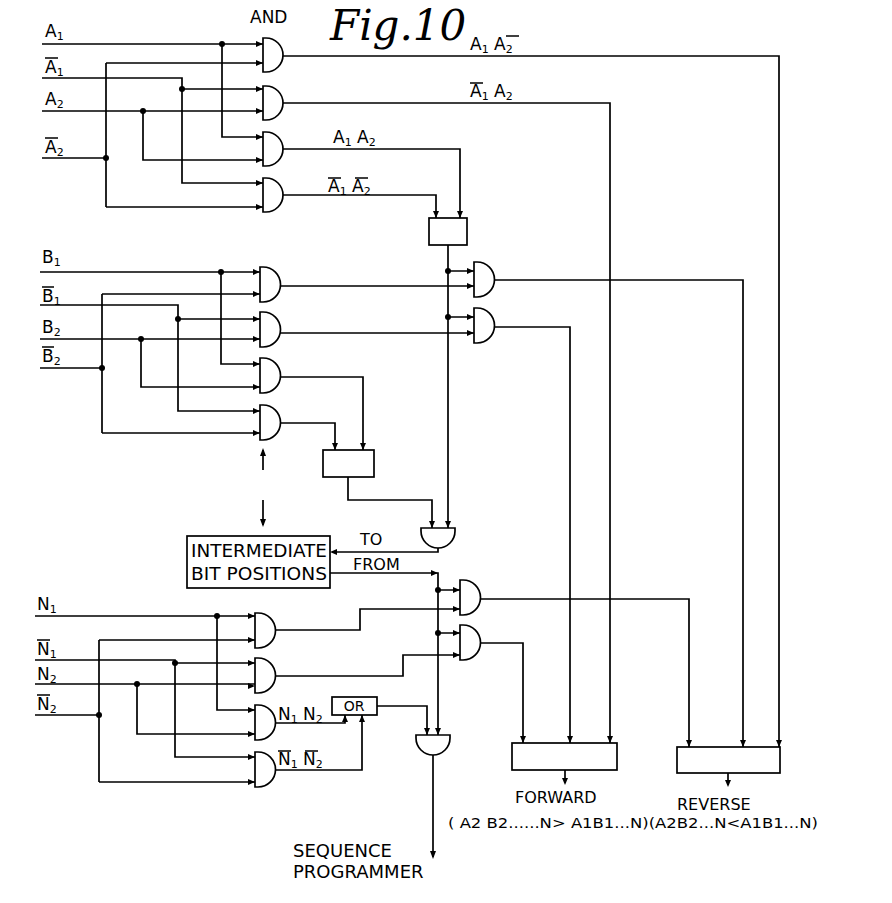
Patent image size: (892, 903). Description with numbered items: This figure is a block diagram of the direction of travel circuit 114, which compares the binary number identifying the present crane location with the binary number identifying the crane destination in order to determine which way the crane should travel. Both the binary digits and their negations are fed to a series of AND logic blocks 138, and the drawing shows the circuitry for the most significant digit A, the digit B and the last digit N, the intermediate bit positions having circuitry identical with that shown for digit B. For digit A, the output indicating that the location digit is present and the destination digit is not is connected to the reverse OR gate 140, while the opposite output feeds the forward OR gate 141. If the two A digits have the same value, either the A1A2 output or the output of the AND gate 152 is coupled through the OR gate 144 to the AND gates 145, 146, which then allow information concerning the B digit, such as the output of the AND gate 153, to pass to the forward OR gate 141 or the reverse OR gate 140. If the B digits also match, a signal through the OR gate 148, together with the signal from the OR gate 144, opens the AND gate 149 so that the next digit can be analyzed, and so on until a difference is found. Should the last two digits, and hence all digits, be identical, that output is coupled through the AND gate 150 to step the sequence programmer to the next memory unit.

The AND gate 152 is at (272, 206).
The OR gate 144 is at (467, 233).
The AND gate 145 is at (487, 276).
The AND gate 146 is at (487, 322).
The AND gate 153 is at (268, 328).
The OR gate 148 is at (374, 462).
The AND logic blocks 138 is at (262, 487).
The direction of travel circuit 114 is at (522, 433).
The AND gate 149 is at (450, 540).
The AND gate 150 is at (443, 745).
The forward OR gate 141 is at (607, 752).
The reverse OR gate 140 is at (690, 757).